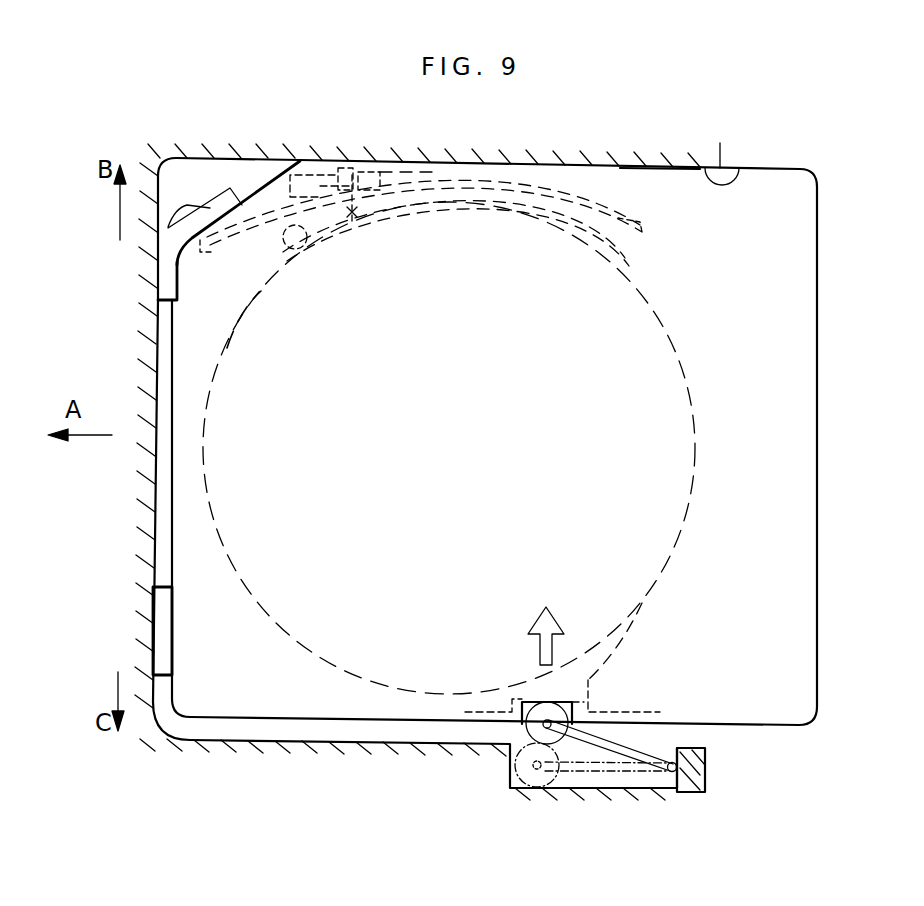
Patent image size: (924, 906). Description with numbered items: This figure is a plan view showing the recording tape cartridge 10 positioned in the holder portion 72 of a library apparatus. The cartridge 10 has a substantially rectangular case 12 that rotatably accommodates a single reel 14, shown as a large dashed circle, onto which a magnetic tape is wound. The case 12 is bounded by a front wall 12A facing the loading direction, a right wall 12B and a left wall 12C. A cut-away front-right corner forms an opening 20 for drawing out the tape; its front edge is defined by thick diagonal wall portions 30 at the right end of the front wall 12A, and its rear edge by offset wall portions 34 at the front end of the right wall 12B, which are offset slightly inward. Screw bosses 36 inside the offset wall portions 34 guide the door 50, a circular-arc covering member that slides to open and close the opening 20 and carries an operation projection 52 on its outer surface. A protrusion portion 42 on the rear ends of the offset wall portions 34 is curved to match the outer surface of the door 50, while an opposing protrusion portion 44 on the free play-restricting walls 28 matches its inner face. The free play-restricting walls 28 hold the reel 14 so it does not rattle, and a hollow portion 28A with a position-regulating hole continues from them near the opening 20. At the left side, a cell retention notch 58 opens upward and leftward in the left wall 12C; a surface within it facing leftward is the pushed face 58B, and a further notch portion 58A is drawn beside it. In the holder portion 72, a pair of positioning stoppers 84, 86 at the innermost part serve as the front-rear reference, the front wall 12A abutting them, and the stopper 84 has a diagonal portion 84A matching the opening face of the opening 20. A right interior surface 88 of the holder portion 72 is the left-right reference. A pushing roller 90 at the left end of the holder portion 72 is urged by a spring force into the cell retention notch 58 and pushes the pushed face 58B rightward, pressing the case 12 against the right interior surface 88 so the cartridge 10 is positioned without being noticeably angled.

The recording tape cartridge 10 is at (833, 281).
The case 12 is at (820, 324).
The front wall 12A is at (170, 372).
The right wall 12B is at (490, 163).
The left wall 12C is at (316, 722).
The reel 14 is at (665, 333).
The opening 20 is at (268, 209).
The free play-restricting walls 28 is at (452, 202).
The hollow portion 28A is at (297, 250).
The diagonal wall portions 30 is at (240, 318).
The offset wall portions 34 is at (340, 177).
The screw bosses 36 is at (295, 190).
The protrusion portion 42 is at (355, 192).
The protrusion portion 44 is at (352, 214).
The door 50 is at (617, 224).
The operation projection 52 is at (373, 183).
The cell retention notch 58 is at (558, 702).
The lower sheet path portion 58A is at (589, 708).
The pushed face 58B is at (515, 700).
The holder portion 72 is at (736, 168).
The positioning stopper 84 is at (172, 285).
The diagonal portion 84A is at (176, 246).
The positioning stopper 86 is at (160, 632).
The right interior surface 88 is at (640, 170).
The pushing roller 90 is at (527, 732).